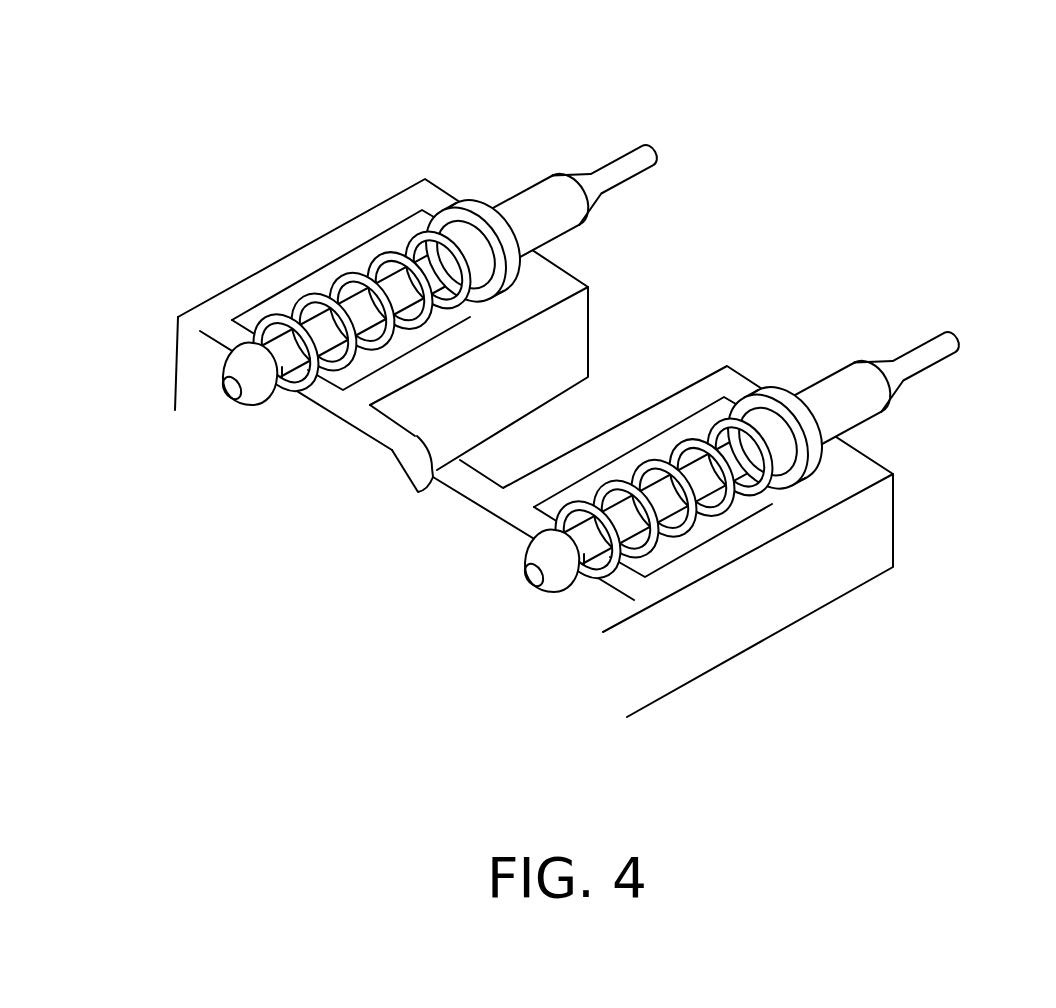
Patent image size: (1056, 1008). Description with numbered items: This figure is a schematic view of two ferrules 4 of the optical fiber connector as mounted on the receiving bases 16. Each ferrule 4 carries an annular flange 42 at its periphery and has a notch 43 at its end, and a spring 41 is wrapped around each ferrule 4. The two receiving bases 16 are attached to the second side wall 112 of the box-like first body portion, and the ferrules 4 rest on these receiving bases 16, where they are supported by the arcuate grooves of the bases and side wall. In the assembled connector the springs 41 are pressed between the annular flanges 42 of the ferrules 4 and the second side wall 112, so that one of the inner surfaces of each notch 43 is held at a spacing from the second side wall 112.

The ferrule 4 is at (513, 177).
The spring 41 is at (388, 258).
The annular flange 42 is at (520, 262).
The notch 43 is at (285, 385).
The receiving base 16 is at (547, 365).
The second side wall 112 is at (527, 523).